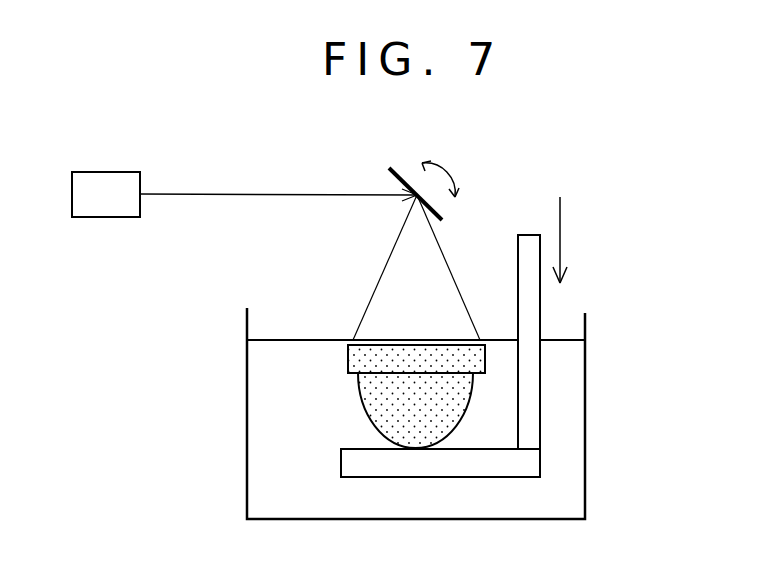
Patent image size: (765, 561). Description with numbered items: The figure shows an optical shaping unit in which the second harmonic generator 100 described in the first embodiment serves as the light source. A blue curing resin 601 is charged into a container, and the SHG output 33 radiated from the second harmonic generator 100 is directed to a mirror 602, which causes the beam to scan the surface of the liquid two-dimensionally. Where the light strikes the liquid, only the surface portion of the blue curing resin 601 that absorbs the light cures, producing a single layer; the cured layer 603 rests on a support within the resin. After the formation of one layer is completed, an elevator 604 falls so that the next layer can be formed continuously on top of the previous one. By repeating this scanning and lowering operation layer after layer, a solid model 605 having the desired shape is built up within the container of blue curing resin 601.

The second harmonic generator 100 is at (106, 179).
The SHG output 33 is at (278, 210).
The mirror 602 is at (410, 174).
The photocurable resin plate 603 is at (395, 327).
The elevator 604 is at (528, 323).
The solid model 605 is at (415, 410).
The blue curing resin 601 is at (416, 413).